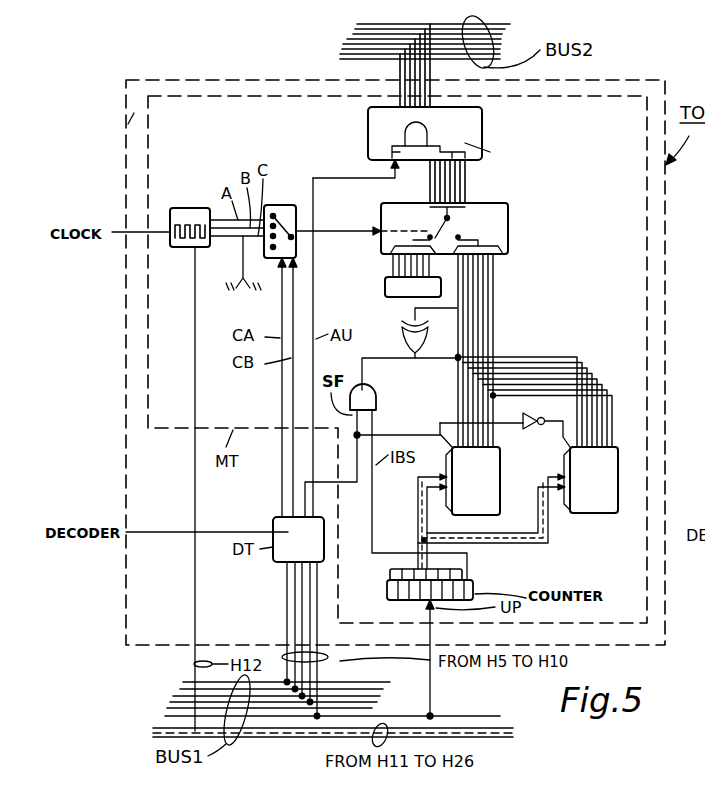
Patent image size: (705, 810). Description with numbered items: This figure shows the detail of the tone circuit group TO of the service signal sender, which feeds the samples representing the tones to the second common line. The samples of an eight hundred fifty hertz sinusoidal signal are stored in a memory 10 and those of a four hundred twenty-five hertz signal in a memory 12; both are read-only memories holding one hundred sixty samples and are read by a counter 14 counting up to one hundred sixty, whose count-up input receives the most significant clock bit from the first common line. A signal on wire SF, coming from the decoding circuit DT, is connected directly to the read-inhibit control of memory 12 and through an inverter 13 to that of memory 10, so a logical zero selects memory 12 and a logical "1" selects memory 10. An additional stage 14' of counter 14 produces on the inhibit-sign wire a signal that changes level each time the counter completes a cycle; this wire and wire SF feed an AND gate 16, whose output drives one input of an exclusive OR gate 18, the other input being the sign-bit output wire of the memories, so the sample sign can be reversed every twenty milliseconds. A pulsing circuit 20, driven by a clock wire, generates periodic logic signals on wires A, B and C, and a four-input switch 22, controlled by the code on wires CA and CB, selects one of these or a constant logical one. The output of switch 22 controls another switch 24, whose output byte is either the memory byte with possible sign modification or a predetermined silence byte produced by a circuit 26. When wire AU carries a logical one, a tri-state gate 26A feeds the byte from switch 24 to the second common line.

The memory 10 is at (606, 516).
The memory 12 is at (500, 480).
The inverter 13 is at (505, 434).
The counter 14 is at (413, 583).
The additional stage 14' is at (457, 576).
The AND gate 16 is at (376, 394).
The exclusive OR gate 18 is at (407, 333).
The pulsing circuit 20 is at (180, 208).
The four-input switch 22 is at (286, 205).
The switch 24 is at (495, 231).
The circuit 26 is at (383, 287).
The 3-state gate 26A is at (483, 131).
The logic 1 level 1 is at (243, 272).